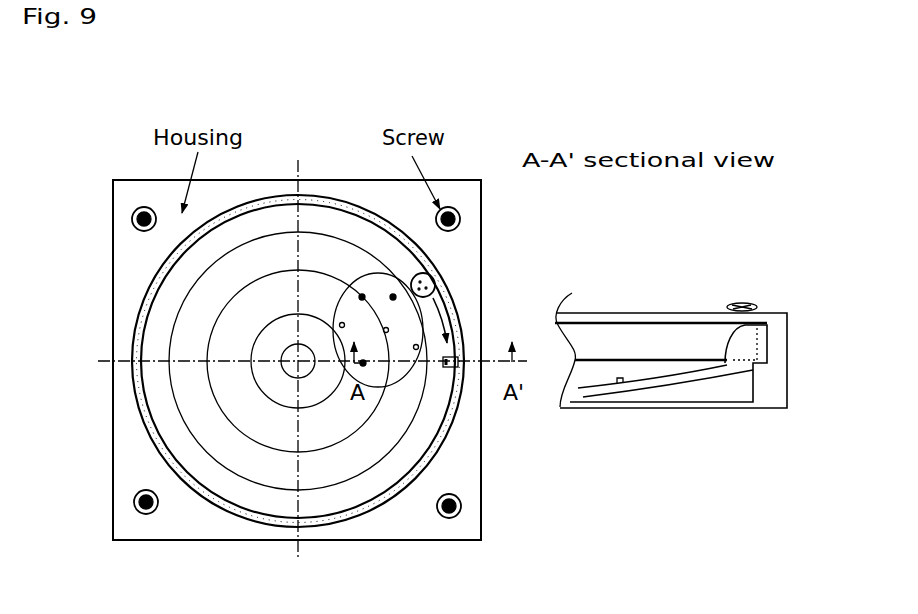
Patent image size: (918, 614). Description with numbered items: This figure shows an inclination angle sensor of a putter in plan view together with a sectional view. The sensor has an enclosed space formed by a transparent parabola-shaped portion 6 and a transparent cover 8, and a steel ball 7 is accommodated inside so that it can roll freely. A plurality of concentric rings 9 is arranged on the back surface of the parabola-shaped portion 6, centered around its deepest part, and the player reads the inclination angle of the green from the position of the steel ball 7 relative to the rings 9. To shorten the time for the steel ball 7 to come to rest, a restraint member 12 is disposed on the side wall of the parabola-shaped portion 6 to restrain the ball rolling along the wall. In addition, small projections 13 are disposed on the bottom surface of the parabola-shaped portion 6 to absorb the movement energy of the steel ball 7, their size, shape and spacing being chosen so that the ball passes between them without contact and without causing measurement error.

The parabola-shaped portion 6 is at (327, 197).
The steel ball 7 is at (432, 277).
The cover 8 is at (695, 311).
The concentric rings 9 is at (358, 472).
The restraint member 12 is at (454, 374).
The small projections 13 is at (617, 375).